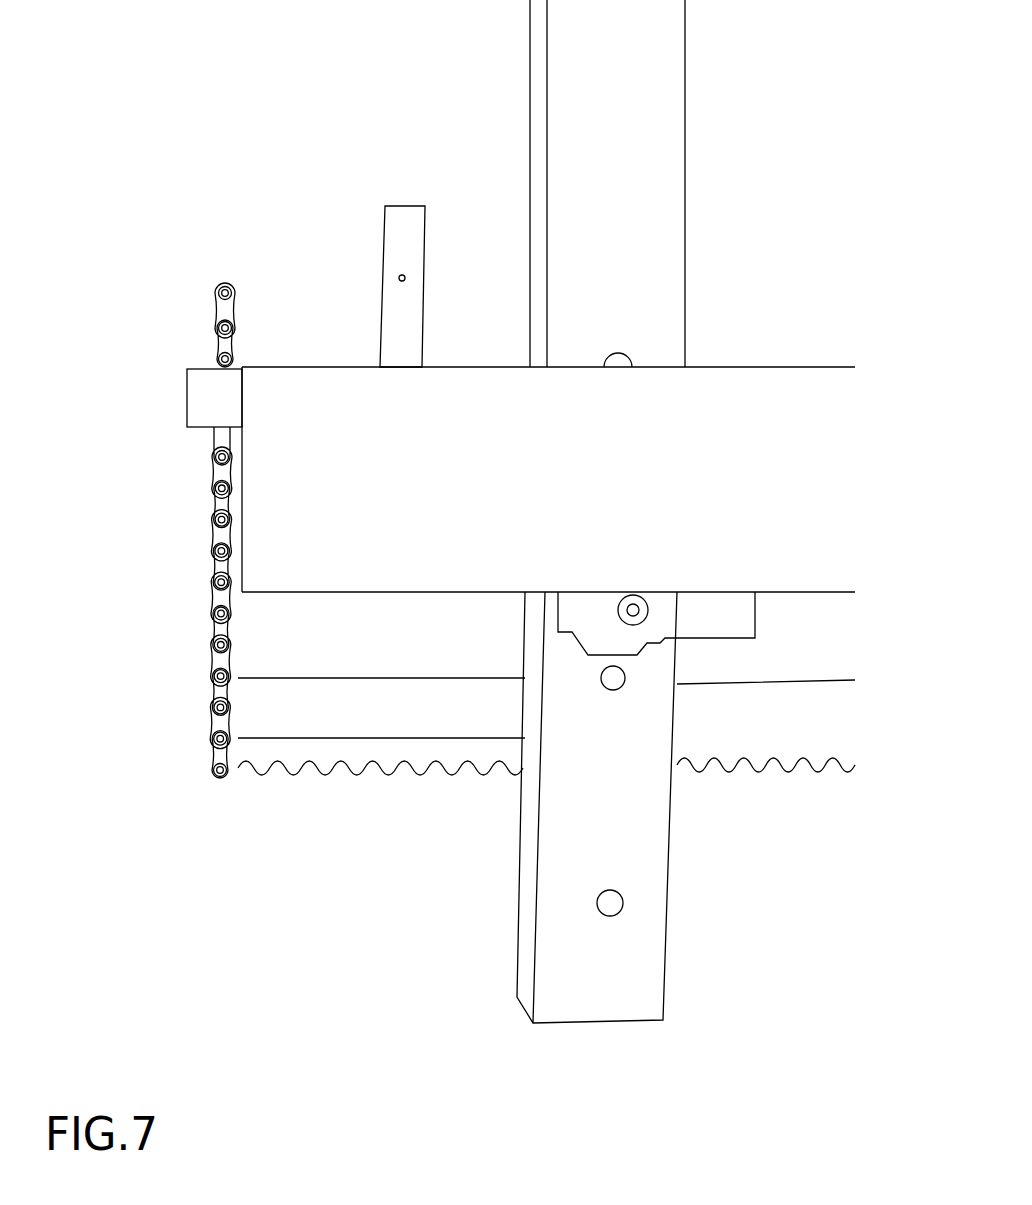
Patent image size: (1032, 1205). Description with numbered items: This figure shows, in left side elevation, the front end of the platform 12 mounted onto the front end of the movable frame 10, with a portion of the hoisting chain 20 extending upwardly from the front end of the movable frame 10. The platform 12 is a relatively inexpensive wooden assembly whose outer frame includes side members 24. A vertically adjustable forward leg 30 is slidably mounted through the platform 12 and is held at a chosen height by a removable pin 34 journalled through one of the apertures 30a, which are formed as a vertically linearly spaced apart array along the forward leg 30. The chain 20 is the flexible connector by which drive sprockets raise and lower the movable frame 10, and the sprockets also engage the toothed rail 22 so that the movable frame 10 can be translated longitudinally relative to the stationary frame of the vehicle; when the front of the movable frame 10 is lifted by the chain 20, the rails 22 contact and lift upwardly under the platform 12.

The movable frame 10 is at (434, 798).
The platform 12 is at (755, 354).
The chain 20 is at (200, 583).
The toothed rail 22 is at (833, 725).
The side member 24 is at (548, 479).
The forward leg 30 is at (640, 143).
The aperture 30a is at (618, 353).
The removable pin 34 is at (633, 595).